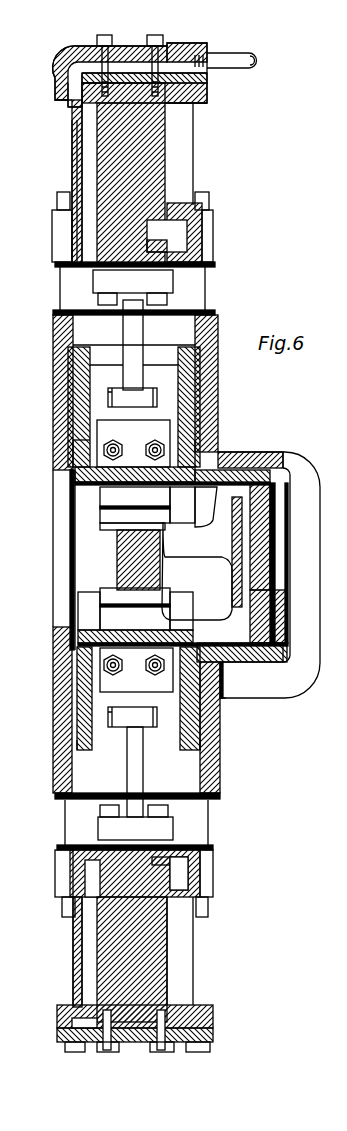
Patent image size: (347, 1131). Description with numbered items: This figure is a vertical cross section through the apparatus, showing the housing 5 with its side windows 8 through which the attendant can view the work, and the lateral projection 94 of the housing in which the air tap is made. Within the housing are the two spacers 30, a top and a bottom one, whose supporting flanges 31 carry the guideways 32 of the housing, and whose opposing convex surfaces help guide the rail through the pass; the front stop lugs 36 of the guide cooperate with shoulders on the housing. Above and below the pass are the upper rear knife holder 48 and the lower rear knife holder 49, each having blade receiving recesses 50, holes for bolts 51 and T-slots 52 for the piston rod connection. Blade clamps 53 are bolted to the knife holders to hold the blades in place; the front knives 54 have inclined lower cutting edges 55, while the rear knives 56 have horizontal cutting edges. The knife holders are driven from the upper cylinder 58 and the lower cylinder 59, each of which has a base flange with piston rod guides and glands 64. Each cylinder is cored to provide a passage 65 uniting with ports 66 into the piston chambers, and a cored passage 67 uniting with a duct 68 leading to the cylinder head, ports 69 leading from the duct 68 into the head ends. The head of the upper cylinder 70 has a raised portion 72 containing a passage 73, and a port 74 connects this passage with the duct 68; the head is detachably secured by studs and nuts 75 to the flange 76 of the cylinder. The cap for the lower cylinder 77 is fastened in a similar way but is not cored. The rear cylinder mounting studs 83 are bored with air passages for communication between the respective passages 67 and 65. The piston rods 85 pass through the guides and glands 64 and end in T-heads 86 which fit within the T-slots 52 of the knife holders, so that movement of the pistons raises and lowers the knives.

The housing 5 is at (50, 334).
The side windows 8 is at (52, 546).
The spacers 30 is at (226, 666).
The supporting flanges 31 is at (215, 330).
The guideways 32 is at (70, 372).
The front stop lugs 36 is at (75, 440).
The upper rear knife holder 48 is at (200, 425).
The lower rear knife holder 49 is at (222, 704).
The blade receiving recesses 50 is at (94, 514).
The bolt holes 51 is at (236, 632).
The T-slots 52 is at (106, 397).
The blade clamps 53 is at (110, 495).
The front knives 54 is at (122, 598).
The inclined lower cutting edges 55 is at (170, 570).
The rear knives 56 is at (108, 585).
The upper cylinder 58 is at (196, 156).
The lower cylinder 59 is at (196, 965).
The glands 64 is at (100, 292).
The passage 65 is at (185, 244).
The ports 66 is at (165, 248).
The cored passage 67 is at (70, 233).
The duct 68 is at (88, 170).
The ports 69 is at (70, 100).
The head of the upper cylinder 70 is at (188, 42).
The raised portion 72 is at (86, 52).
The passage 73 is at (125, 60).
The port 74 is at (58, 73).
The studs and nuts 75 is at (170, 40).
The flange 76 is at (72, 110).
The cap for the lower cylinder 77 is at (213, 1028).
The rear cylinder mounting studs 83 is at (70, 289).
The piston rods 85 is at (140, 330).
The T-heads 86 is at (145, 397).
The lateral projection 94 is at (306, 440).